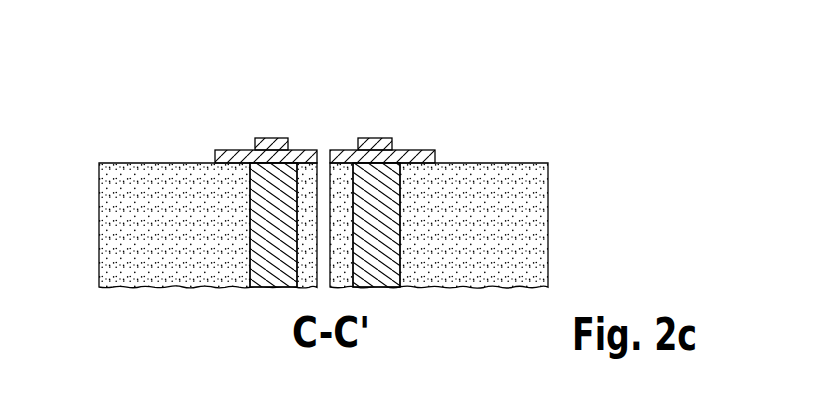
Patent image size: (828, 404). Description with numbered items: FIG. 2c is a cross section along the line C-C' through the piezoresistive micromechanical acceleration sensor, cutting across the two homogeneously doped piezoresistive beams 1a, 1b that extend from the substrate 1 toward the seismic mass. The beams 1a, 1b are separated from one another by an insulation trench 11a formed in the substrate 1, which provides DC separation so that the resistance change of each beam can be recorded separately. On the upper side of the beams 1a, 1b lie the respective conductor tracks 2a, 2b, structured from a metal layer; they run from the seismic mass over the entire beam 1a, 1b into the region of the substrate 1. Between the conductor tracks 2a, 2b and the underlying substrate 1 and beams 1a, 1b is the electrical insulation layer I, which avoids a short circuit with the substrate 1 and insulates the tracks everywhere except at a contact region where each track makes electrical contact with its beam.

The substrate 1 is at (99, 226).
The piezoresistive beam 1a is at (277, 278).
The piezoresistive beam 1b is at (378, 278).
The insulation layer I is at (236, 150).
The conductor track 2a is at (272, 138).
The conductor track 2b is at (372, 138).
The insulation trench 11a is at (323, 162).